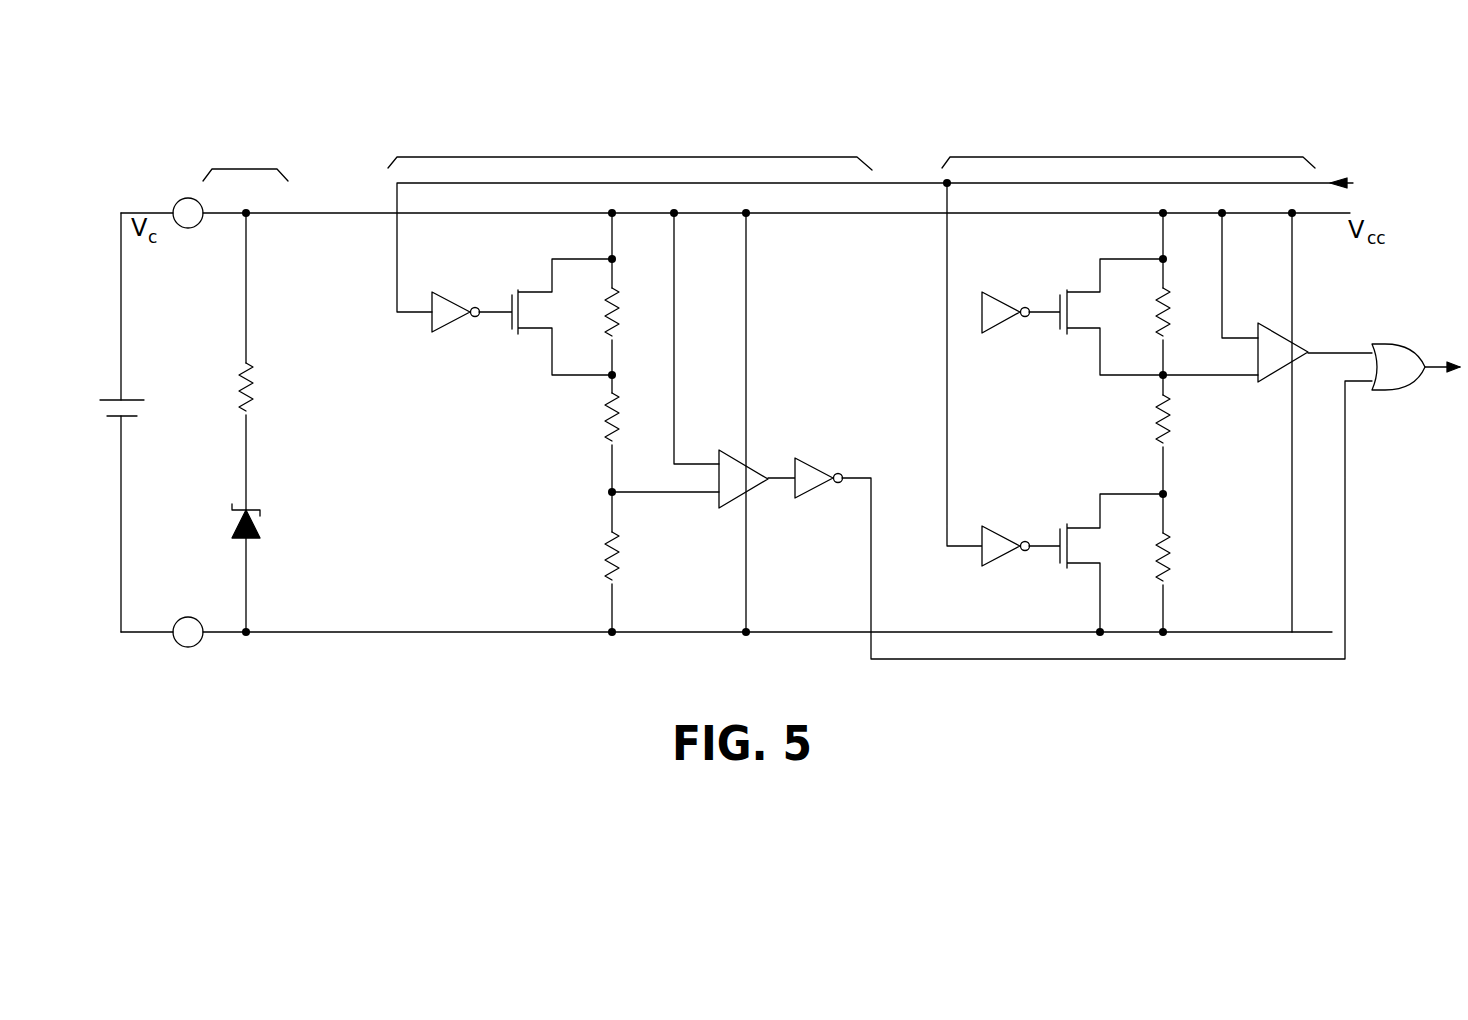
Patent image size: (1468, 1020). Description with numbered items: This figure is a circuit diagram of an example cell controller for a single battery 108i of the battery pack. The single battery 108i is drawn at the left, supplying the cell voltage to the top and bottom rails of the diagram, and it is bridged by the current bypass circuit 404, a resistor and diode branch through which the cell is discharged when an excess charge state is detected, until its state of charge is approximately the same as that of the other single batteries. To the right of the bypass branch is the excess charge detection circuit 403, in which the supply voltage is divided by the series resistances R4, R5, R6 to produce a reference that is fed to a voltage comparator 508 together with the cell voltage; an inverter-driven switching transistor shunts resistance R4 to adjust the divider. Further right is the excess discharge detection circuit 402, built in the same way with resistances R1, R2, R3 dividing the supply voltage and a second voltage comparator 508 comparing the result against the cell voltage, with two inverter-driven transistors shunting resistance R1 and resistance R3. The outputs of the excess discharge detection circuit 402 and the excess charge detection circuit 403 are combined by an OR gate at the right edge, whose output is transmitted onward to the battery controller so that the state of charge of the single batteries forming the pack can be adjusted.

The excess discharge detection circuit 402 is at (1313, 162).
The excess charge detection circuit 403 is at (813, 157).
The current bypass circuit 404 is at (285, 177).
The voltage comparator 508 is at (755, 466).
The single battery 108i is at (135, 400).
The resistance R1 is at (1153, 320).
The resistance R2 is at (1158, 432).
The resistance R3 is at (1168, 540).
The resistance R4 is at (603, 322).
The resistance R5 is at (605, 432).
The resistance R6 is at (603, 565).